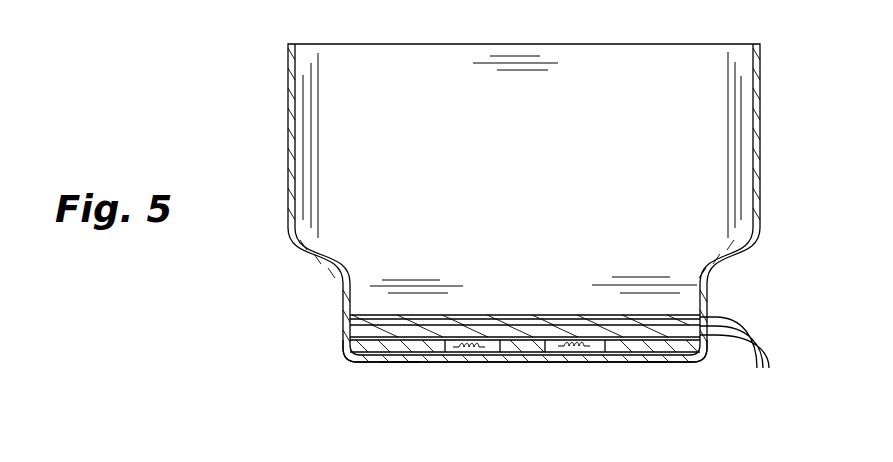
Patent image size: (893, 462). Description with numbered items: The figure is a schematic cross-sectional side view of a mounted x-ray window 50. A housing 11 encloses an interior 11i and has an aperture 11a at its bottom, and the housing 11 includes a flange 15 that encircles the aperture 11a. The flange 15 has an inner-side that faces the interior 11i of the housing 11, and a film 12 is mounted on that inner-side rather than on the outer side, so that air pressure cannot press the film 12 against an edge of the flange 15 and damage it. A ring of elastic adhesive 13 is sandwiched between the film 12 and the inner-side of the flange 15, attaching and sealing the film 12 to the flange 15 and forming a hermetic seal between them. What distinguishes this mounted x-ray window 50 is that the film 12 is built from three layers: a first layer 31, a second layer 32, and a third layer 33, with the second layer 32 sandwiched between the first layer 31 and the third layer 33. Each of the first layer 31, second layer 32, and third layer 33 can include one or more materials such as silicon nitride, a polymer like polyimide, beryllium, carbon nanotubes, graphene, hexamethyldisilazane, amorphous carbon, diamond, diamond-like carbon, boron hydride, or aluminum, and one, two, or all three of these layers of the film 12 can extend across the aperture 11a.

The mounted x-ray window 50 is at (194, 87).
The housing 11 is at (289, 122).
The interior of the housing 11i is at (541, 170).
The aperture 11a is at (530, 378).
The film 12 is at (738, 355).
The ring of elastic adhesive 13 is at (350, 353).
The flange 15 is at (388, 358).
The first layer 31 is at (552, 315).
The second layer 32 is at (545, 331).
The third layer 33 is at (500, 353).